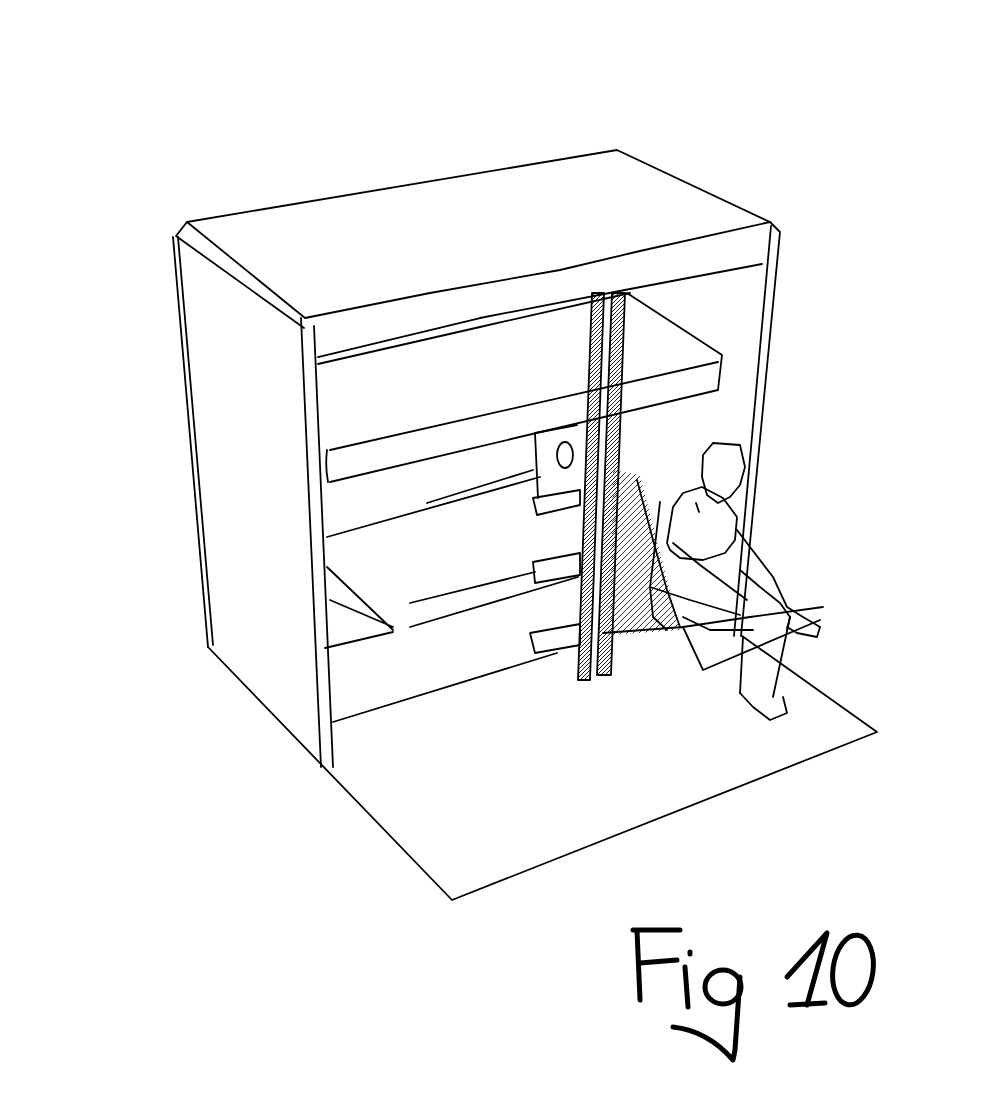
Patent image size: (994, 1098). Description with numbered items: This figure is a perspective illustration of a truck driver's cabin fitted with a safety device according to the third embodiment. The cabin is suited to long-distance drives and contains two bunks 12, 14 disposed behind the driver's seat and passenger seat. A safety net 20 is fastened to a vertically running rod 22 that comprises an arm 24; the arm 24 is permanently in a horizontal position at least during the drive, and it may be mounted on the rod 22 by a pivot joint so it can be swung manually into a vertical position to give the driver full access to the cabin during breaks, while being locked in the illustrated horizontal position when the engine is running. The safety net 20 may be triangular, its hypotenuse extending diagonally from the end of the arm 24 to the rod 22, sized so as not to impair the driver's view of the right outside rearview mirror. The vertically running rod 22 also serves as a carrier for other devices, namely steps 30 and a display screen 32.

The bunk 12 is at (407, 597).
The bunk 14 is at (455, 383).
The safety net 20 is at (640, 473).
The vertically running rod 22 is at (603, 652).
The arm 24 is at (682, 660).
The steps 30 is at (533, 567).
The display screen 32 is at (560, 435).